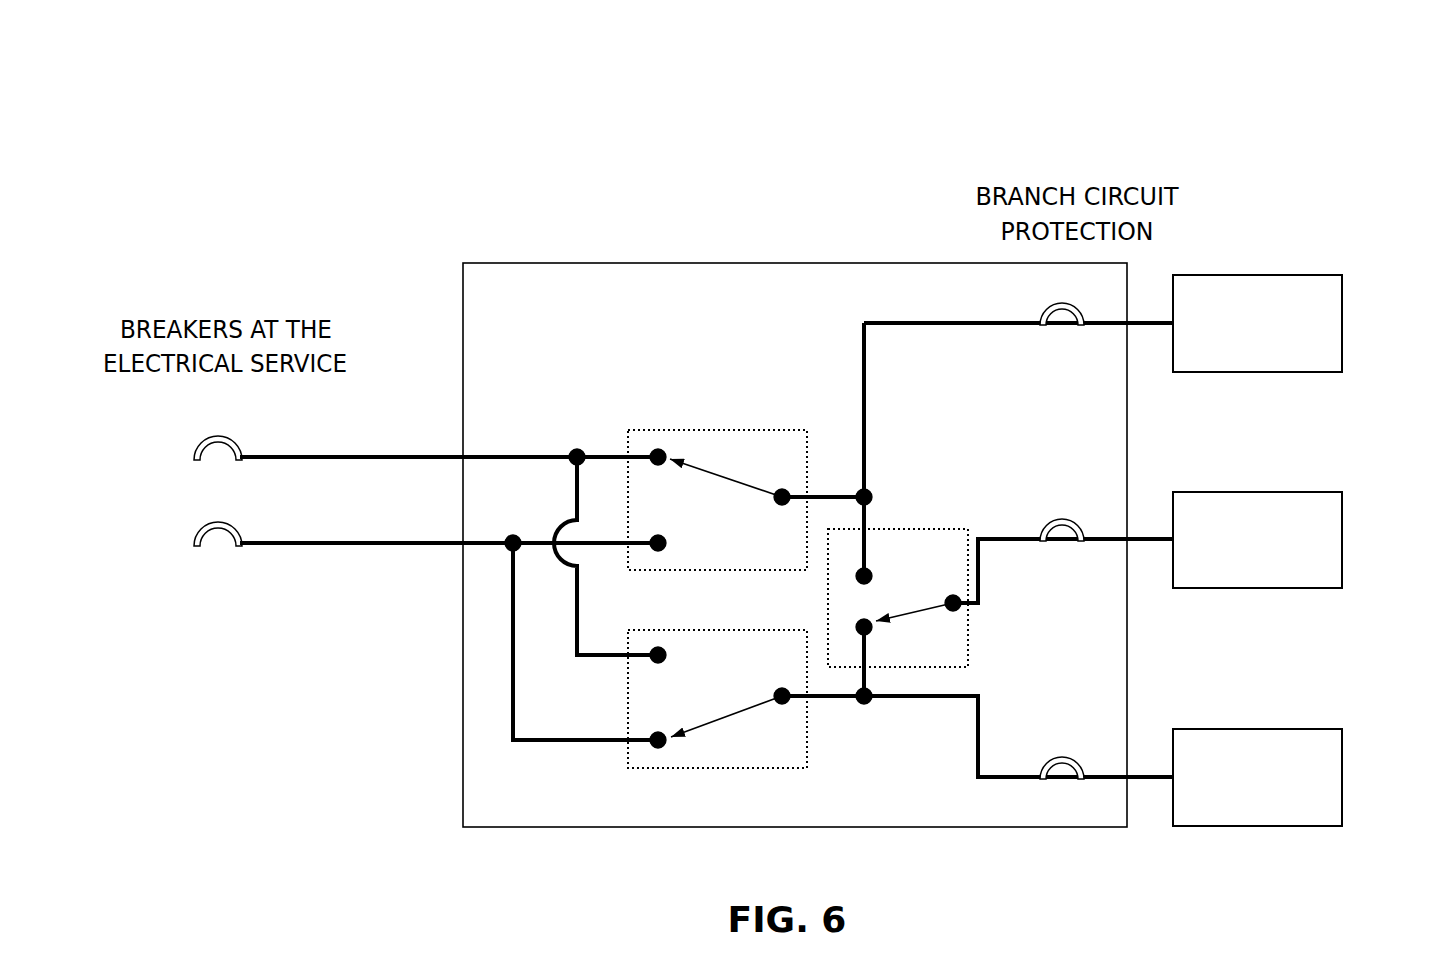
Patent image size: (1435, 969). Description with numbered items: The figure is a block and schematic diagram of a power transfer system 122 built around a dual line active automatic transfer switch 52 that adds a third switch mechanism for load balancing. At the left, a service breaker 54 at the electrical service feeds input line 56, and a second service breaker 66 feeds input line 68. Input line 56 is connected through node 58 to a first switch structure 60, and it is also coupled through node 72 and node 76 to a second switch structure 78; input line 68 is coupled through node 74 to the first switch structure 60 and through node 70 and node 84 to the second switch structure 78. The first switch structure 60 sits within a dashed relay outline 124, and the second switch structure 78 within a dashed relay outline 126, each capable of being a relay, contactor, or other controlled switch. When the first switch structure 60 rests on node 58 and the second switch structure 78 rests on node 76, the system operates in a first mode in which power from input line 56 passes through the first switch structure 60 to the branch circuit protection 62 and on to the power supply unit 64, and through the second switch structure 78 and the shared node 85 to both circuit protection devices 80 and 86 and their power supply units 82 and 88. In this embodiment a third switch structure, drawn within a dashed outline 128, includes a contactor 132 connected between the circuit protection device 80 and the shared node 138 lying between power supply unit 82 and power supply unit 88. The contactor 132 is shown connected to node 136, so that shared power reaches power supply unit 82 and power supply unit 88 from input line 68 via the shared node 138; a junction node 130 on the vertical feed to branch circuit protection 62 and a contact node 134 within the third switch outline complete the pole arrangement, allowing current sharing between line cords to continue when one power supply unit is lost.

The dual line active automatic transfer switch 52 is at (603, 263).
The service breaker 54 is at (231, 436).
The input line 56 is at (325, 460).
The node 58 is at (658, 447).
The first switch structure 60 is at (718, 476).
The branch circuit protection 62 is at (1074, 320).
The power supply unit 64 is at (1344, 320).
The second service breaker 66 is at (231, 522).
The input line 68 is at (325, 546).
The node 70 is at (513, 532).
The node 72 is at (577, 447).
The node 74 is at (658, 533).
The node 76 is at (658, 645).
The second switch structure 78 is at (740, 705).
The circuit protection device 80 is at (1068, 518).
The power supply unit 82 is at (1344, 543).
The node 84 is at (658, 730).
The shared node 85 is at (782, 706).
The circuit protection device 86 is at (1066, 756).
The power supply unit 88 is at (1344, 778).
The power transfer system 122 is at (1285, 183).
The relay C1 124 is at (746, 430).
The relay C2 126 is at (713, 768).
The relay C2 128 is at (930, 529).
The junction node 130 is at (870, 493).
The contactor 132 is at (905, 614).
The relay contact 134 is at (855, 577).
The node 136 is at (870, 636).
The shared node 138 is at (864, 706).